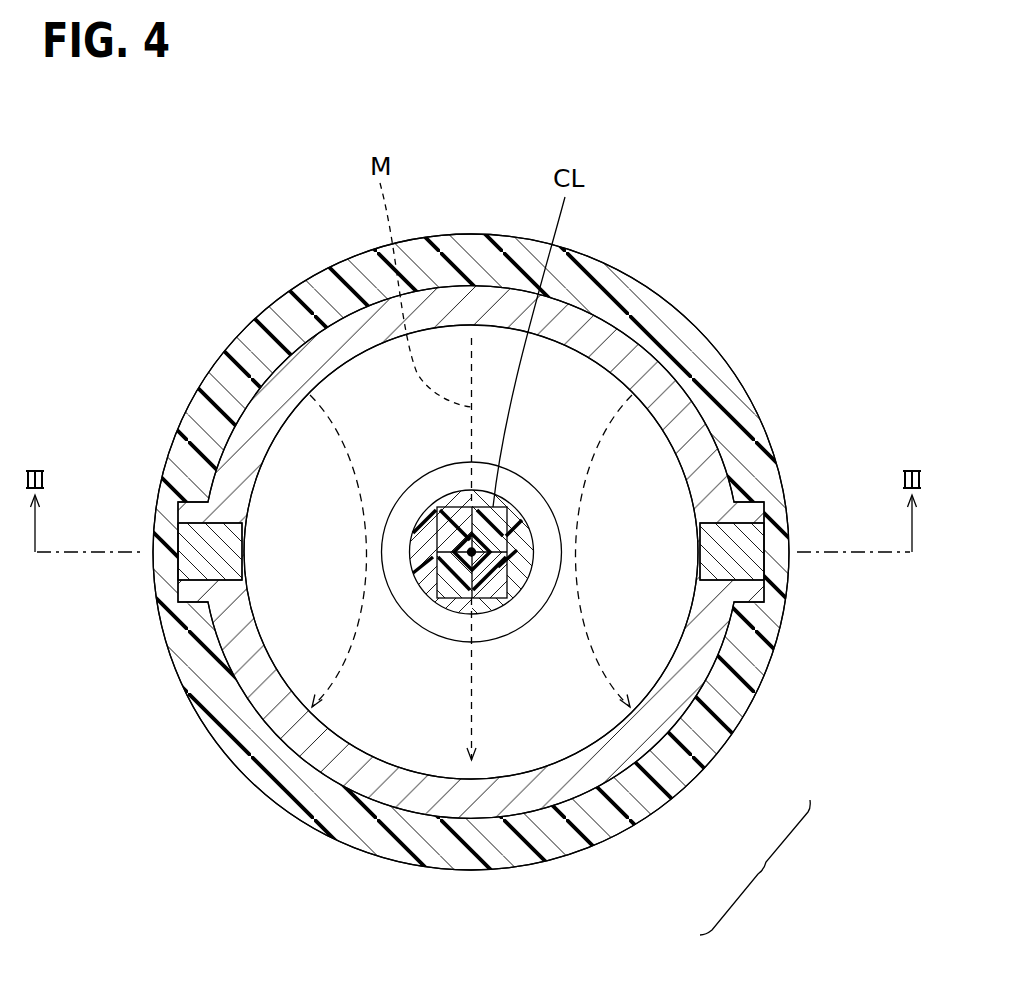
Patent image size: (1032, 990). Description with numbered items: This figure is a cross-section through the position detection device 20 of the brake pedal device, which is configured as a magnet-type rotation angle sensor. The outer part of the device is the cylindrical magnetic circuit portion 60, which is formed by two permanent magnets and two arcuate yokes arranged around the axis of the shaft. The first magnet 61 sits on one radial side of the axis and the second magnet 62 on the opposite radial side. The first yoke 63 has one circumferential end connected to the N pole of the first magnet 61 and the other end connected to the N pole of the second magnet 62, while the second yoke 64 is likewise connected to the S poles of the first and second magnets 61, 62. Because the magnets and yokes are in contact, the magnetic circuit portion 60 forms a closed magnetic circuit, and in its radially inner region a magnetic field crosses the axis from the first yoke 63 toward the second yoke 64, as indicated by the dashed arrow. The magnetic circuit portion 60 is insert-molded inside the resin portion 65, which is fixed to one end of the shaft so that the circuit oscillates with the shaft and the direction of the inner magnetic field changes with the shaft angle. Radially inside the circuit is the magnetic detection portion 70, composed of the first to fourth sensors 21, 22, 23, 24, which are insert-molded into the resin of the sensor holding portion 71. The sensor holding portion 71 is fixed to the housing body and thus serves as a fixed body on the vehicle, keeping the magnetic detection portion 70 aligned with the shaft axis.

The position detection device 20 is at (755, 867).
The first sensor 21 is at (448, 507).
The second sensor 22 is at (436, 572).
The third sensor 23 is at (486, 540).
The fourth sensor 24 is at (498, 598).
The magnetic circuit portion 60 is at (683, 730).
The first magnet 61 is at (187, 557).
The second magnet 62 is at (755, 557).
The first yoke 63 is at (470, 306).
The second yoke 64 is at (434, 805).
The resin portion 65 is at (213, 707).
The magnetic detection portion 70 is at (523, 572).
The sensor holding portion 71 is at (410, 578).